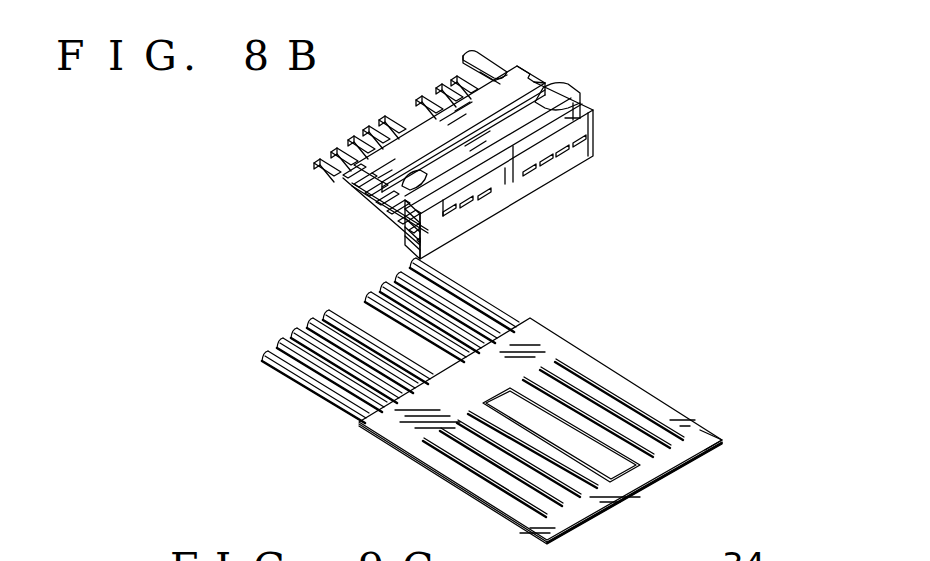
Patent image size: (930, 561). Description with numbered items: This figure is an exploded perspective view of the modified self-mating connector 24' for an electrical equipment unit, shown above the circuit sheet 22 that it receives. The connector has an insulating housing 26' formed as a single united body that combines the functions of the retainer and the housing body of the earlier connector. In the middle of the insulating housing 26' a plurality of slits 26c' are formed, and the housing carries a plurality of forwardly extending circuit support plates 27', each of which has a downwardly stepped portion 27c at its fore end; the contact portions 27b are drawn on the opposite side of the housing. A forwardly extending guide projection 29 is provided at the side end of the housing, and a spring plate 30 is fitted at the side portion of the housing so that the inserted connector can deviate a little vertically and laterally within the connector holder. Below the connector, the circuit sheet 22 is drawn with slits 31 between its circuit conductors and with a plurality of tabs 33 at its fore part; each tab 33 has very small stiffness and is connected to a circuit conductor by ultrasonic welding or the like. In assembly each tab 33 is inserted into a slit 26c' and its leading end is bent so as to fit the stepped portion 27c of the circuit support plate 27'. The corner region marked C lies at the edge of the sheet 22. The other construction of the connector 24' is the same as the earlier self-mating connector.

The self-mating connector 24' is at (515, 129).
The insulating housing 26' is at (538, 162).
The slits 26c' is at (537, 189).
The circuit support plates 27' is at (335, 204).
The contact portions 27b is at (441, 88).
The downwardly stepped portion 27c is at (340, 150).
The guide projection 29 is at (488, 60).
The spring plate 30 is at (580, 85).
The slits 31 is at (587, 415).
The tabs 33 is at (367, 293).
The circuit sheet 22 is at (680, 457).
The board corner C is at (703, 418).